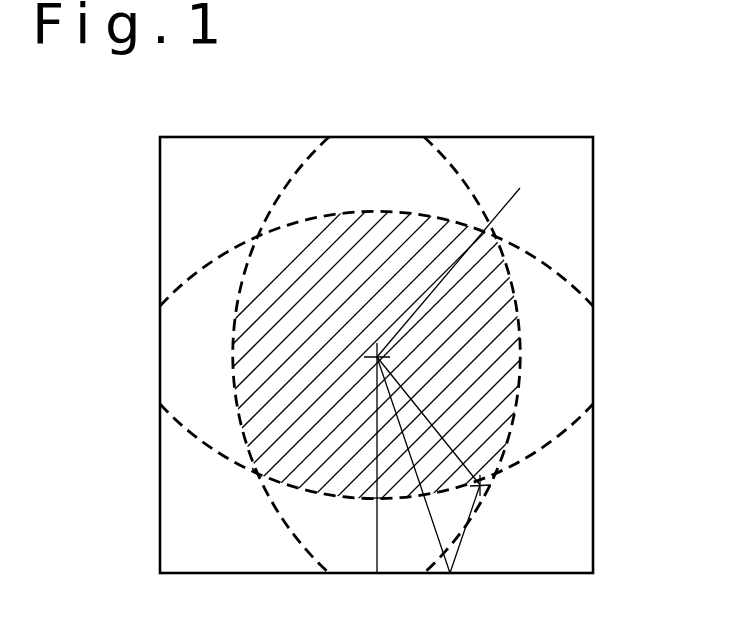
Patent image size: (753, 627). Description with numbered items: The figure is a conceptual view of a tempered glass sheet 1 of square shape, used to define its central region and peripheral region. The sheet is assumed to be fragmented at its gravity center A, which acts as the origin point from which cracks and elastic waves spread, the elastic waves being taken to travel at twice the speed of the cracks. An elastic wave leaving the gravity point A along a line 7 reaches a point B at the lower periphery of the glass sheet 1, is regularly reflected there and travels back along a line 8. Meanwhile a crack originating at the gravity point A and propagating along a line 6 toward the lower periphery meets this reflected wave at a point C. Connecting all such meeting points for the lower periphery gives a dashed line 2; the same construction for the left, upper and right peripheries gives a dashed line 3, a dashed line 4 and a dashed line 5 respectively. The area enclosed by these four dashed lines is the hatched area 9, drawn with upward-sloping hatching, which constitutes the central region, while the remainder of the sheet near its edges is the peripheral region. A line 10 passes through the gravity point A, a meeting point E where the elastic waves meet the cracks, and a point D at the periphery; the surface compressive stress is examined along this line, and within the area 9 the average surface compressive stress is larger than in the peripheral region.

The tempered glass sheet 1 is at (158, 232).
The dashed line 2 is at (187, 432).
The dashed line 3 is at (233, 332).
The dashed line 4 is at (553, 277).
The dashed line 5 is at (523, 353).
The line 6 is at (497, 412).
The line 7 is at (433, 574).
The line 8 is at (462, 549).
The hatched area 9 is at (250, 470).
The line 10 is at (325, 488).
The gravity center A is at (458, 262).
The point B is at (453, 575).
The point C is at (490, 487).
The point D is at (375, 573).
The meeting point E is at (375, 500).